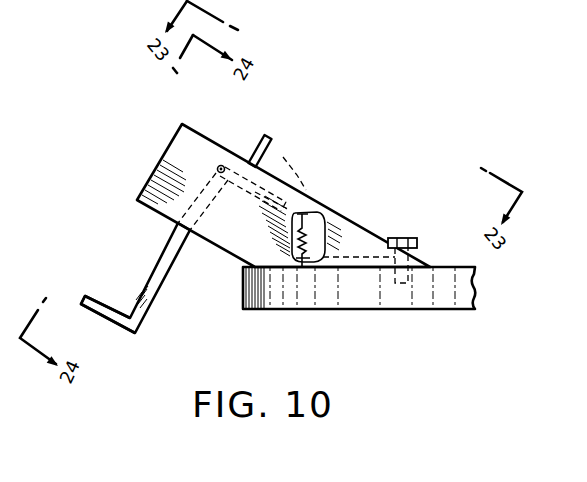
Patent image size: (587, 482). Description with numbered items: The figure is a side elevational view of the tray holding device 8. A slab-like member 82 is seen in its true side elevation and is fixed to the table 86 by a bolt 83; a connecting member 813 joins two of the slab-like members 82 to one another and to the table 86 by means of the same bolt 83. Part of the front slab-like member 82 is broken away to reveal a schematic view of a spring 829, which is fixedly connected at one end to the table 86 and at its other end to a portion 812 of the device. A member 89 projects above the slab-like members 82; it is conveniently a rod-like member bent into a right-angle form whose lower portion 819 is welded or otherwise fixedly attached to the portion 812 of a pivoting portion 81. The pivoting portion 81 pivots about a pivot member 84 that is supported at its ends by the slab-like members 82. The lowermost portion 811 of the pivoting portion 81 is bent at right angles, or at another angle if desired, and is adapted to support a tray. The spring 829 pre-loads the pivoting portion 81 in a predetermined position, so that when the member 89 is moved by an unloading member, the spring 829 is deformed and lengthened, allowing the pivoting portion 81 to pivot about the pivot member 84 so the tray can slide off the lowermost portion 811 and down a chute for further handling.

The tray holding device 8 is at (122, 153).
The pivoting portion 81 is at (156, 292).
The lowermost portion 811 is at (107, 308).
The slab-like member 82 is at (250, 226).
The portion 812 is at (300, 205).
The connecting member 813 is at (359, 256).
The lower portion 819 is at (306, 190).
The spring 829 is at (306, 230).
The bolt 83 is at (405, 237).
The pivot member 84 is at (218, 166).
The table 86 is at (292, 298).
The member 89 is at (253, 144).